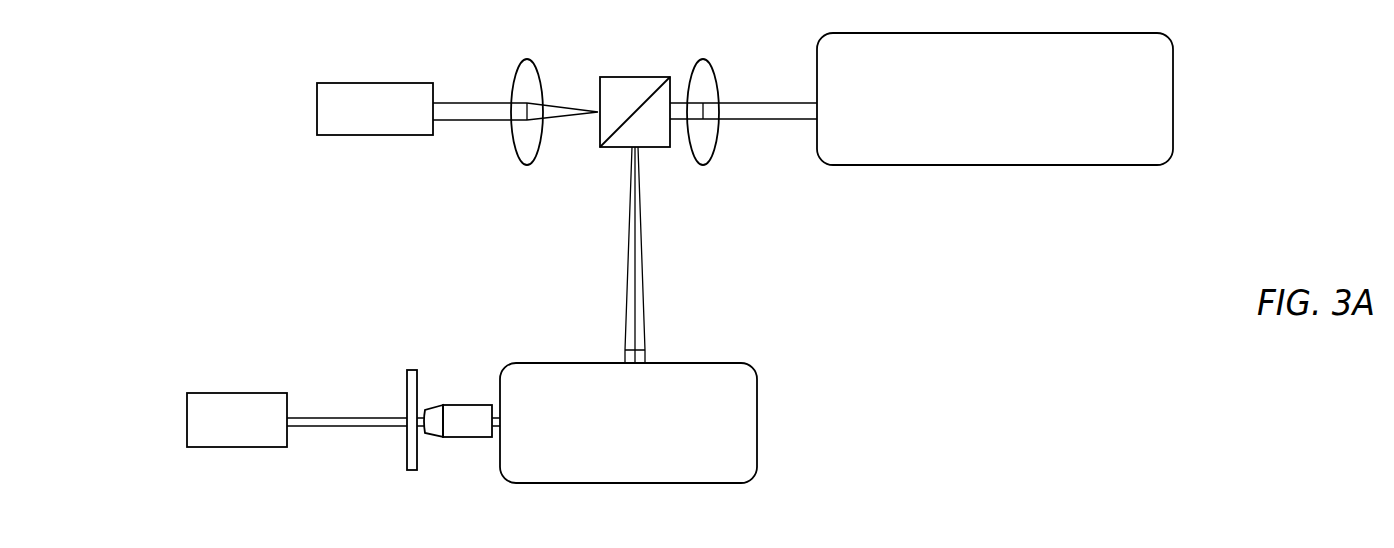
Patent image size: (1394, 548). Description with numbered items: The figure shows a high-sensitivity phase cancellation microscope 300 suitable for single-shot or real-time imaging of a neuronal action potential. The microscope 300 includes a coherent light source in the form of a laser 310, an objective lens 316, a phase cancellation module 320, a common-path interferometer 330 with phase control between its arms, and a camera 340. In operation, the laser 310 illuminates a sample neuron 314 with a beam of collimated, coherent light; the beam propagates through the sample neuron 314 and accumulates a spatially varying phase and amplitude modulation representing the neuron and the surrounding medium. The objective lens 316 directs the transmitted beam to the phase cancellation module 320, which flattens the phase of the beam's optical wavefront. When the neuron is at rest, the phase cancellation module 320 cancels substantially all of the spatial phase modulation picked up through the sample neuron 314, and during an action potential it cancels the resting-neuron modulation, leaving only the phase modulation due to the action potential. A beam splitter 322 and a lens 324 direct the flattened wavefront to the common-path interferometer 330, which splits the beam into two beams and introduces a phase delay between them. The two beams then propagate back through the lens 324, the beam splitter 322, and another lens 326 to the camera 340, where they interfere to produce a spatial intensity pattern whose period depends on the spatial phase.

The high-sensitivity phase cancellation microscope 300 is at (165, 128).
The laser 310 is at (237, 438).
The sample neuron 314 is at (411, 403).
The objective lens 316 is at (458, 443).
The phase cancellation module 320 is at (628, 442).
The beam splitter 322 is at (635, 85).
The lens 324 is at (704, 94).
The lens 326 is at (525, 94).
The common-path interferometer 330 is at (995, 116).
The camera 340 is at (375, 127).